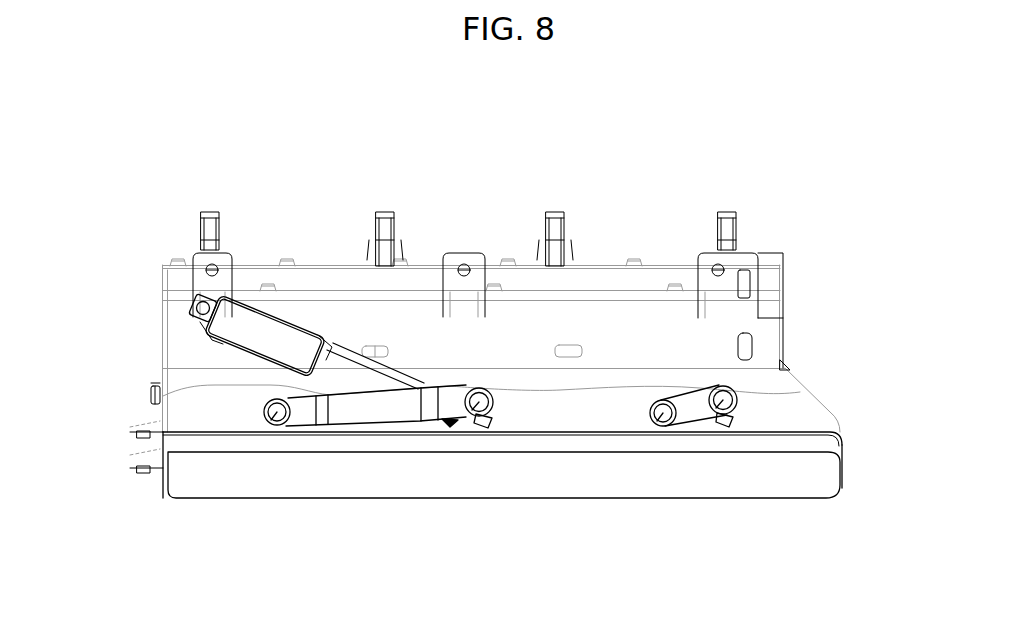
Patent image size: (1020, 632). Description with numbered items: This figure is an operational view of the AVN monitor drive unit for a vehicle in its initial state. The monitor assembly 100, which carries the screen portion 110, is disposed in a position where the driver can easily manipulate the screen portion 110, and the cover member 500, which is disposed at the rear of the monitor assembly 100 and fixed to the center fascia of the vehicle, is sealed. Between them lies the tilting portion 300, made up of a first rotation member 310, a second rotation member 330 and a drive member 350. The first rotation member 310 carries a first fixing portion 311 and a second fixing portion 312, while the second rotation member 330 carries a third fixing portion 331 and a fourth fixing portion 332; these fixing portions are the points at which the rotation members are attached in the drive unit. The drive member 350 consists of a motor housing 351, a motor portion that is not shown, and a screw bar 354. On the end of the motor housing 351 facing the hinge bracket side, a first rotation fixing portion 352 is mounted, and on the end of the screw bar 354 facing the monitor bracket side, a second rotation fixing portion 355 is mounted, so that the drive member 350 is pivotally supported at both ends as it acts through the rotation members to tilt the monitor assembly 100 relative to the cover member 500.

The monitor assembly 100 is at (486, 501).
The screen portion 110 is at (563, 478).
The tilting portion 300 is at (461, 342).
The first rotation member 310 is at (716, 352).
The first fixing portion 311 is at (660, 426).
The second fixing portion 312 is at (738, 395).
The second rotation member 330 is at (341, 373).
The third fixing portion 331 is at (277, 426).
The fourth fixing portion 332 is at (476, 416).
The drive member 350 is at (248, 352).
The motor housing 351 is at (228, 341).
The first rotation fixing portion 352 is at (191, 304).
The screw bar 354 is at (158, 393).
The second rotation fixing portion 355 is at (447, 420).
The cover member 500 is at (502, 322).